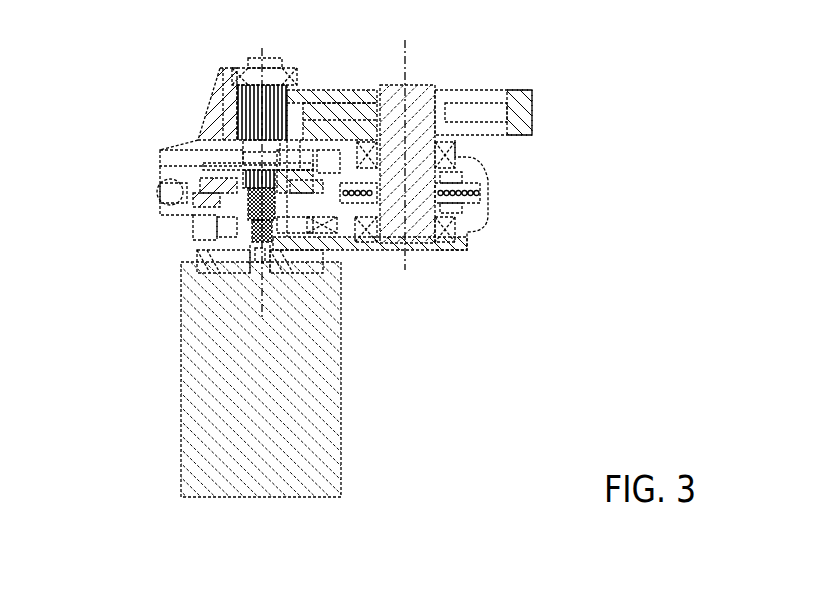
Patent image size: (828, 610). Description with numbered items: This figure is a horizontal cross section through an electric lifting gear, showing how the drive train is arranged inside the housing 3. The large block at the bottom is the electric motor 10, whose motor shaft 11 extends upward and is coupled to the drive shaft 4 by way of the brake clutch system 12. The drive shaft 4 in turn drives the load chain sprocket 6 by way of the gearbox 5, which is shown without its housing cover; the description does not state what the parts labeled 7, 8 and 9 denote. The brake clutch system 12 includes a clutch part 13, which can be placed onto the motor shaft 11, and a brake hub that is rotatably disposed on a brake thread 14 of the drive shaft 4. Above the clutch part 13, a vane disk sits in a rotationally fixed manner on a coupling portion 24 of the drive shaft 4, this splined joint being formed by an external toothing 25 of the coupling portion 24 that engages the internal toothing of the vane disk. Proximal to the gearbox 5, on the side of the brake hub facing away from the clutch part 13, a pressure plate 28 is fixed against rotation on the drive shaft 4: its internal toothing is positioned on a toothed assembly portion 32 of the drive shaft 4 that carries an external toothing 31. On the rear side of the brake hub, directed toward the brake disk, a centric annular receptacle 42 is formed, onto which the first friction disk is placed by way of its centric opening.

The housing 3 is at (183, 145).
The drive shaft 4 is at (243, 157).
The gearbox 5 is at (307, 79).
The load chain sprocket 6 is at (468, 203).
The flange 7 is at (517, 90).
The bolt 8 is at (243, 97).
The hub 9 is at (420, 85).
The electric motor 10 is at (193, 417).
The motor shaft 11 is at (258, 257).
The brake clutch system 12 is at (216, 229).
The clutch part 13 is at (285, 253).
The brake thread 14 is at (248, 207).
The coupling portion 24 is at (253, 226).
The external toothing 25 is at (255, 239).
The pressure plate 28 is at (243, 169).
The external toothing 31 is at (272, 177).
The toothed assembly portion 32 is at (241, 177).
The annular receptacle 42 is at (293, 198).